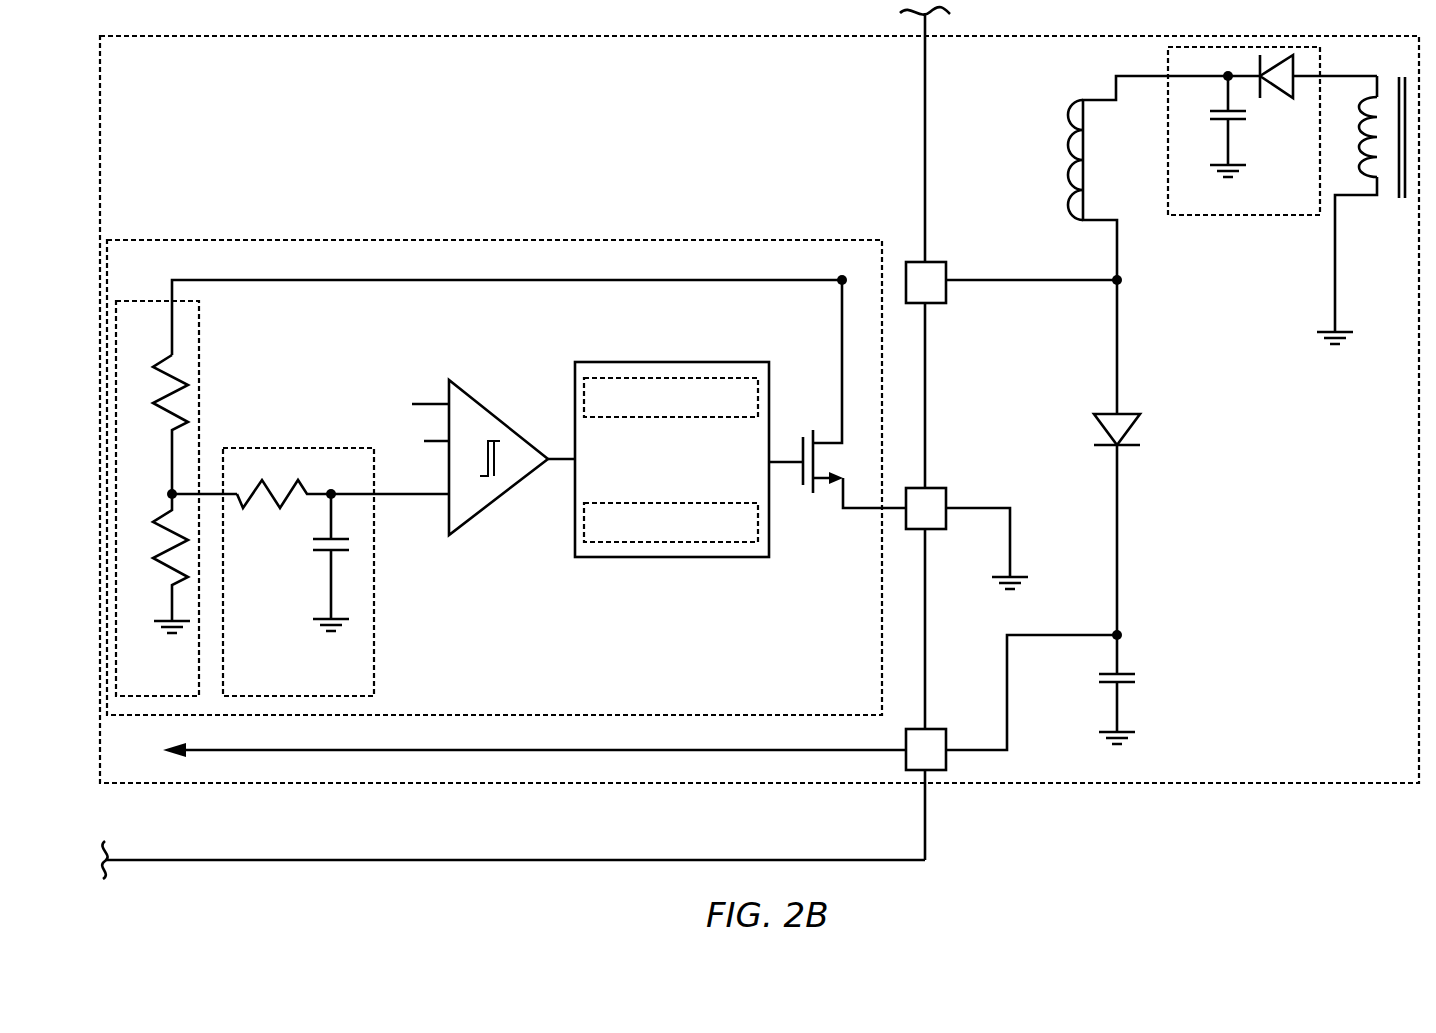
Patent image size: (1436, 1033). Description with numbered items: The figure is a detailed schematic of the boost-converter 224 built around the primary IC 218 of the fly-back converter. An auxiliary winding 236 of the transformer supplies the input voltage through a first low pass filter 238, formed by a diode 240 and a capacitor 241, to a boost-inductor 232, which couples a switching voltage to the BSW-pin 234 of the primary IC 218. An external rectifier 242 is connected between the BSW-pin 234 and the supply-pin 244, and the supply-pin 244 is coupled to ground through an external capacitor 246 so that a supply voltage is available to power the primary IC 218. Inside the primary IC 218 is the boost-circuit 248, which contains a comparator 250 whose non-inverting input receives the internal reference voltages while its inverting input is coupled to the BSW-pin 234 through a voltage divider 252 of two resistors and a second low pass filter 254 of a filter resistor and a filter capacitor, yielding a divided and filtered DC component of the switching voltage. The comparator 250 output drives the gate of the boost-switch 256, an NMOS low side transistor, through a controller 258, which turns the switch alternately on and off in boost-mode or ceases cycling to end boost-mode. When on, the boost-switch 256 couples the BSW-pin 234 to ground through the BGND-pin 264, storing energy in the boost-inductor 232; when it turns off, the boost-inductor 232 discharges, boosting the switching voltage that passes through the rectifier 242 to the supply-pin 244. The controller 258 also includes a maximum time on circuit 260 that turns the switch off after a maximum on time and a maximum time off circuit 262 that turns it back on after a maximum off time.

The primary IC 218 is at (513, 824).
The boost-converter 224 is at (759, 409).
The boost-inductor 232 is at (1053, 104).
The BSW-pin 234 is at (927, 262).
The auxiliary winding 236 is at (1390, 218).
The first low pass filter 238 is at (1244, 131).
The diode 240 is at (1290, 57).
The capacitor 241 is at (1238, 120).
The rectifier 242 is at (1095, 445).
The Vcc-pin 244 is at (927, 729).
The external capacitor 246 is at (1135, 678).
The boost-circuit 248 is at (494, 477).
The comparator 250 is at (500, 416).
The voltage divider 252 is at (479, 488).
The second low pass filter 254 is at (336, 572).
The boost-switch 256 is at (803, 410).
The controller 258 is at (668, 362).
The maximum time on circuit 260 is at (671, 397).
The maximum time off circuit 262 is at (671, 522).
The BGND-pin 264 is at (927, 488).